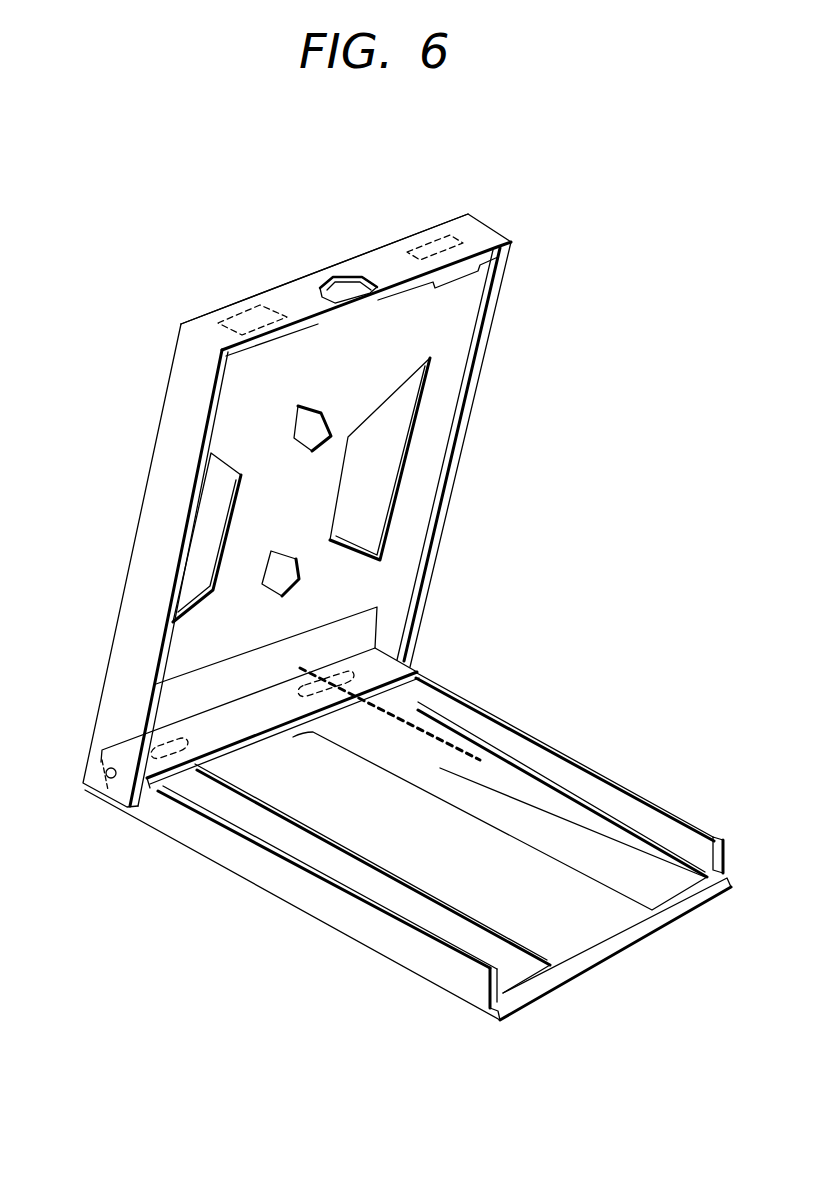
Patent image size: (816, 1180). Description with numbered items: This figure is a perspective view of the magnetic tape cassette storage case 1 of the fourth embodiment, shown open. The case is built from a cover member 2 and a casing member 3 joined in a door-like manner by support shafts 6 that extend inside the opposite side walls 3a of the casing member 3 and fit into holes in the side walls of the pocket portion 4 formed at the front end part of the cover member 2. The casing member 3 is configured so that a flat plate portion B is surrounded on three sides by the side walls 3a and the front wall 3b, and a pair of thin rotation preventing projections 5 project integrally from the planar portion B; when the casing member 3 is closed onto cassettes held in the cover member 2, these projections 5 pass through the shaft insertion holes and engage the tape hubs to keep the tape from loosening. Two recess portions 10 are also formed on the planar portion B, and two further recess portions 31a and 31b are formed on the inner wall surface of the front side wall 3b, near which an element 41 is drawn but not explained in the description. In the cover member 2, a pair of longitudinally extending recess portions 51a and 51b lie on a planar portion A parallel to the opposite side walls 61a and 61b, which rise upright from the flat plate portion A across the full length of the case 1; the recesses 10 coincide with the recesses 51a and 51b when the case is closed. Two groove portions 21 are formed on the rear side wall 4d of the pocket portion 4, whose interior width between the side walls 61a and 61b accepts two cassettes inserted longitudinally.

The magnetic tape cassette storage case 1 is at (493, 622).
The cover member 2 is at (523, 737).
The casing member 3 is at (475, 402).
The side walls of casing member 3a is at (152, 481).
The front wall of casing member 3b is at (390, 256).
The recess portion 31a is at (237, 316).
The recess portion 31b is at (462, 242).
The tab 41 is at (372, 296).
The recess portions 10 is at (205, 541).
The rotation preventing projections 5 is at (313, 440).
The pocket portion 4 is at (312, 753).
The rear side wall of pocket portion 4d is at (233, 698).
The groove portions 21 is at (178, 732).
The support shaft 6 is at (110, 778).
The recess portion 51a is at (310, 855).
The recess portion 51b is at (623, 848).
The side wall of cover member 61a is at (367, 943).
The side wall of cover member 61b is at (547, 764).
The planar portion of cover member A is at (522, 862).
The flat plate portion of casing member B is at (305, 352).